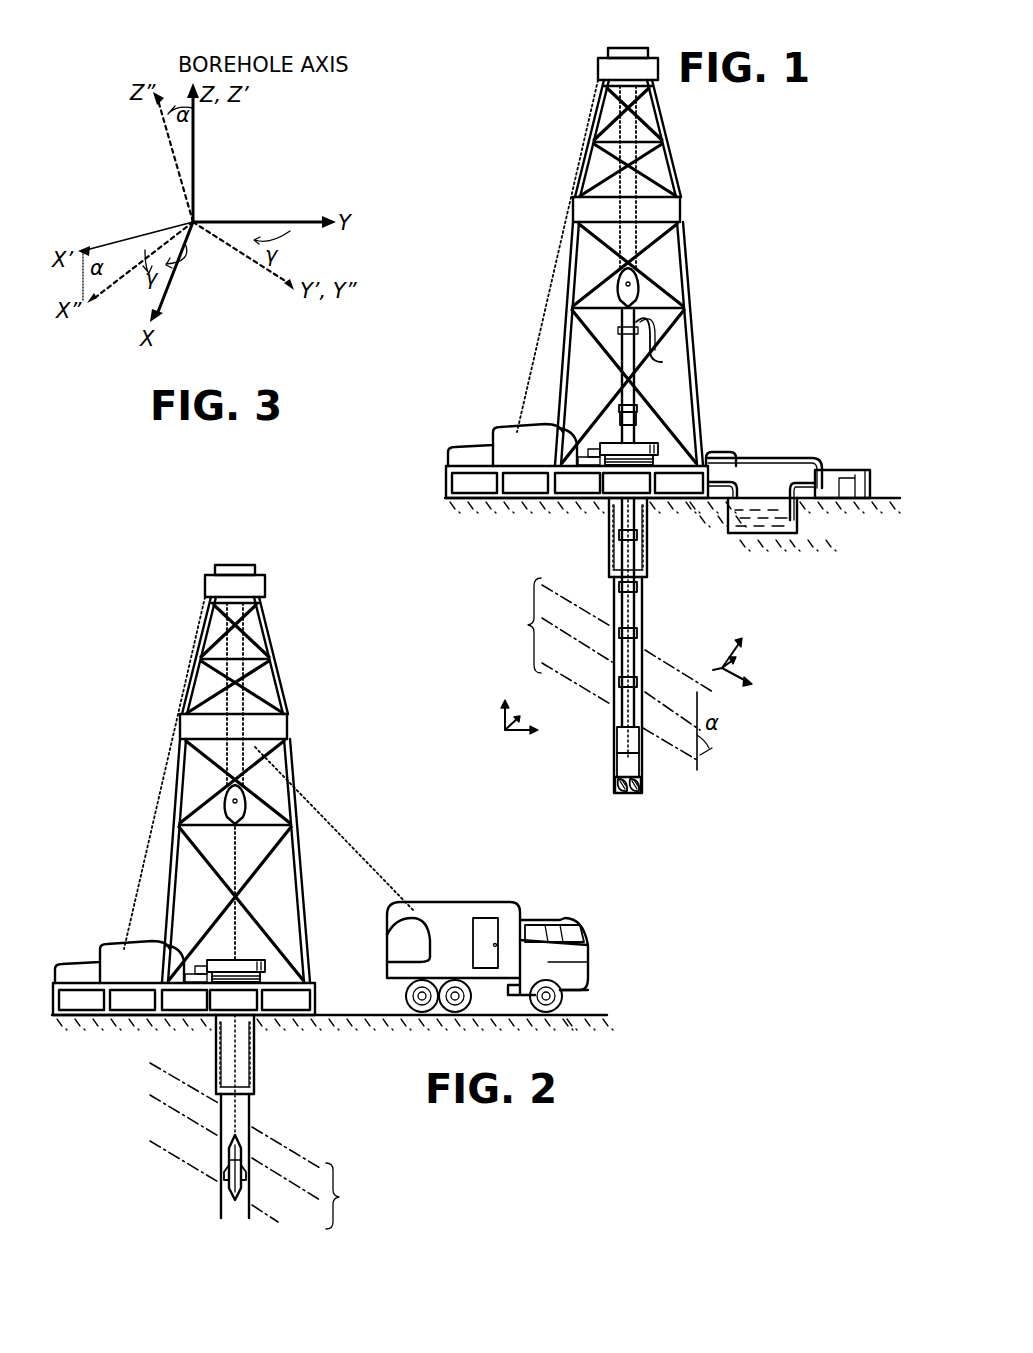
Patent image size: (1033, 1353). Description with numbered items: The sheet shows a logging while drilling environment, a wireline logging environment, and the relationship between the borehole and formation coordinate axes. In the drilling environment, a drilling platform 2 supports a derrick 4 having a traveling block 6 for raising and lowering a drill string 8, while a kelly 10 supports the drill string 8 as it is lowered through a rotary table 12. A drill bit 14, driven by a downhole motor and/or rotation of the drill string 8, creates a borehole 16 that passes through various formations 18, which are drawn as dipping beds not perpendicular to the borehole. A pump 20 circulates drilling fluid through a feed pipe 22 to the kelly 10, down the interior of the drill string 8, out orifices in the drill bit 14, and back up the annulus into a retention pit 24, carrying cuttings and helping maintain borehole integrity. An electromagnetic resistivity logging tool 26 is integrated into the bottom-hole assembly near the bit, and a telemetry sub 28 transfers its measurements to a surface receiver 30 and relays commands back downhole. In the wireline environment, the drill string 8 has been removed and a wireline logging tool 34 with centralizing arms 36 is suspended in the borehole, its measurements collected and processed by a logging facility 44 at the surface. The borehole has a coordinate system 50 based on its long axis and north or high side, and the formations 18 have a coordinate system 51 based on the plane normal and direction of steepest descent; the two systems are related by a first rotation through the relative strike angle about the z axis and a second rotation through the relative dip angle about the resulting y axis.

In FIG. 1, the drilling platform 2 is at (446, 480).
In FIG. 2, the drilling platform 2 is at (201, 978).
In FIG. 1, the derrick 4 is at (670, 165).
In FIG. 2, the derrick 4 is at (269, 773).
In FIG. 1, the traveling block 6 is at (634, 294).
In FIG. 2, the traveling block 6 is at (272, 790).
In FIG. 1, the drill string 8 is at (631, 597).
In FIG. 1, the kelly 10 is at (628, 345).
In FIG. 1, the rotary table 12 is at (645, 448).
In FIG. 2, the rotary table 12 is at (268, 938).
In FIG. 1, the drill bit 14 is at (636, 786).
In FIG. 1, the borehole 16 is at (643, 627).
In FIG. 1, the formations 18 is at (601, 669).
In FIG. 2, the formations 18 is at (261, 1146).
In FIG. 1, the pump 20 is at (828, 473).
In FIG. 1, the feed pipe 22 is at (770, 458).
In FIG. 1, the retention pit 24 is at (742, 523).
In FIG. 1, the electromagnetic resistivity logging tool 26 is at (617, 760).
In FIG. 1, the telemetry sub 28 is at (617, 740).
In FIG. 1, the surface receiver 30 is at (636, 410).
In FIG. 2, the wireline logging tool 34 is at (235, 1160).
In FIG. 2, the centralizing arms 36 is at (224, 1178).
In FIG. 2, the logging facility 44 is at (452, 900).
In FIG. 1, the borehole coordinate system 50 is at (497, 731).
In FIG. 1, the formation coordinate system 51 is at (750, 644).